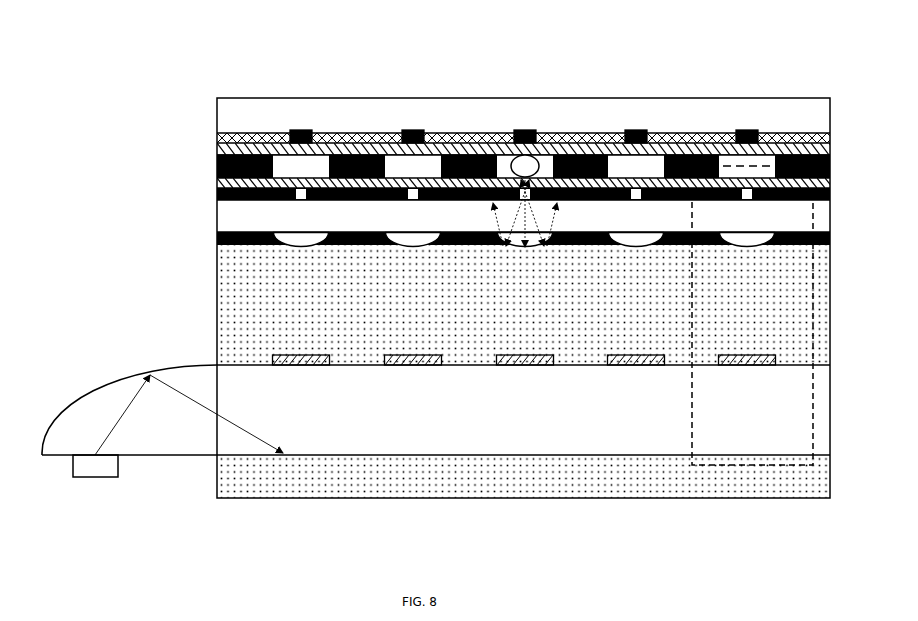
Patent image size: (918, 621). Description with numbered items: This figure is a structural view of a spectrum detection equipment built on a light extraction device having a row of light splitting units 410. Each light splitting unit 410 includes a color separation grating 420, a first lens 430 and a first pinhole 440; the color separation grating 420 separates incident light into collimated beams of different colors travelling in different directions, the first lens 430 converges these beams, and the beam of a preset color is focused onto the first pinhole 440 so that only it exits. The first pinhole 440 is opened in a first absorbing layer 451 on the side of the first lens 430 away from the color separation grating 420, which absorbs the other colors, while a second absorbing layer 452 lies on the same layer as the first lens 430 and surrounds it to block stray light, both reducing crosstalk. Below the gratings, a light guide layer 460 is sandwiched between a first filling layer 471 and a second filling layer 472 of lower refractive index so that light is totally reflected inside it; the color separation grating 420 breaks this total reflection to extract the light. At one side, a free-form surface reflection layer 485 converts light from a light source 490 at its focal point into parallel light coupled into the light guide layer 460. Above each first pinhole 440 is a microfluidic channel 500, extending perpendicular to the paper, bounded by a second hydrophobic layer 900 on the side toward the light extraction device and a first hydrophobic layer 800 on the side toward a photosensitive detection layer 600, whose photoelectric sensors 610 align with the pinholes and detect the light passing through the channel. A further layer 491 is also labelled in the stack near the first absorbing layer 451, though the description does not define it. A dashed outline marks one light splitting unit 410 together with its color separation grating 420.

The light splitting unit 410 is at (727, 133).
The color separation grating 420 is at (660, 418).
The first lens 430 is at (460, 140).
The first pinhole 440 is at (302, 165).
The first absorbing layer 451 is at (249, 140).
The second absorbing layer 452 is at (378, 143).
The light guide layer 460 is at (452, 412).
The first filling layer 471 is at (325, 298).
The second filling layer 472 is at (592, 465).
The free-form surface reflection layer 485 is at (113, 380).
The light source 490 is at (95, 460).
The light shielding layer 491 is at (577, 133).
The microfluidic channel 500 is at (395, 167).
The photosensitive detection layer 600 is at (500, 160).
The photoelectric sensor 610 is at (527, 133).
The first hydrophobic layer 800 is at (232, 153).
The second hydrophobic layer 900 is at (636, 160).